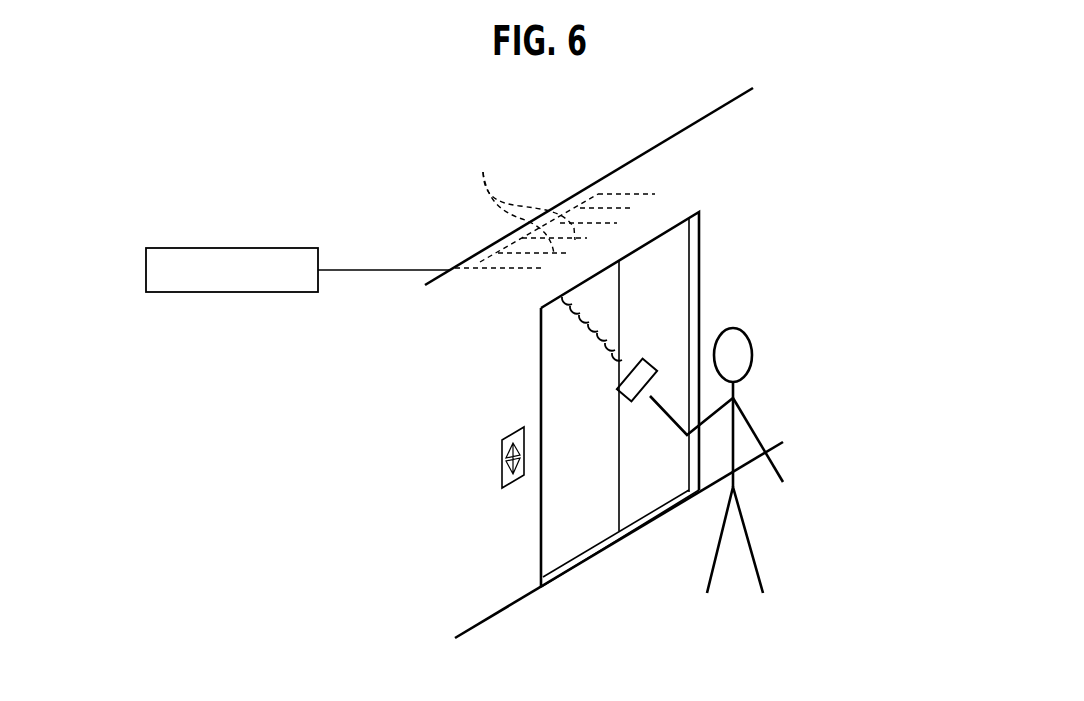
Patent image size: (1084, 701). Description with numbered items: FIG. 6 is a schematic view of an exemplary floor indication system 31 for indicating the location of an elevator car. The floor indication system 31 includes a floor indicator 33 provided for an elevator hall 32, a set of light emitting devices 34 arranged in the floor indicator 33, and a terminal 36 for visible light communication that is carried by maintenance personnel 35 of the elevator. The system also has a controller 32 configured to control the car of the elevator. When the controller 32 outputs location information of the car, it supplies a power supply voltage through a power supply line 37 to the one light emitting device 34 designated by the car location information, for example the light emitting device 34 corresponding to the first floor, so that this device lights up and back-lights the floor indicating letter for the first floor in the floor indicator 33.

The floor indication system 31 is at (838, 228).
The controller 32 is at (282, 249).
The floor indicator 33 is at (680, 196).
The light emitting devices 34 is at (555, 218).
The maintenance personnel 35 is at (752, 355).
The terminal 36 is at (640, 362).
The power supply line 37 is at (370, 270).